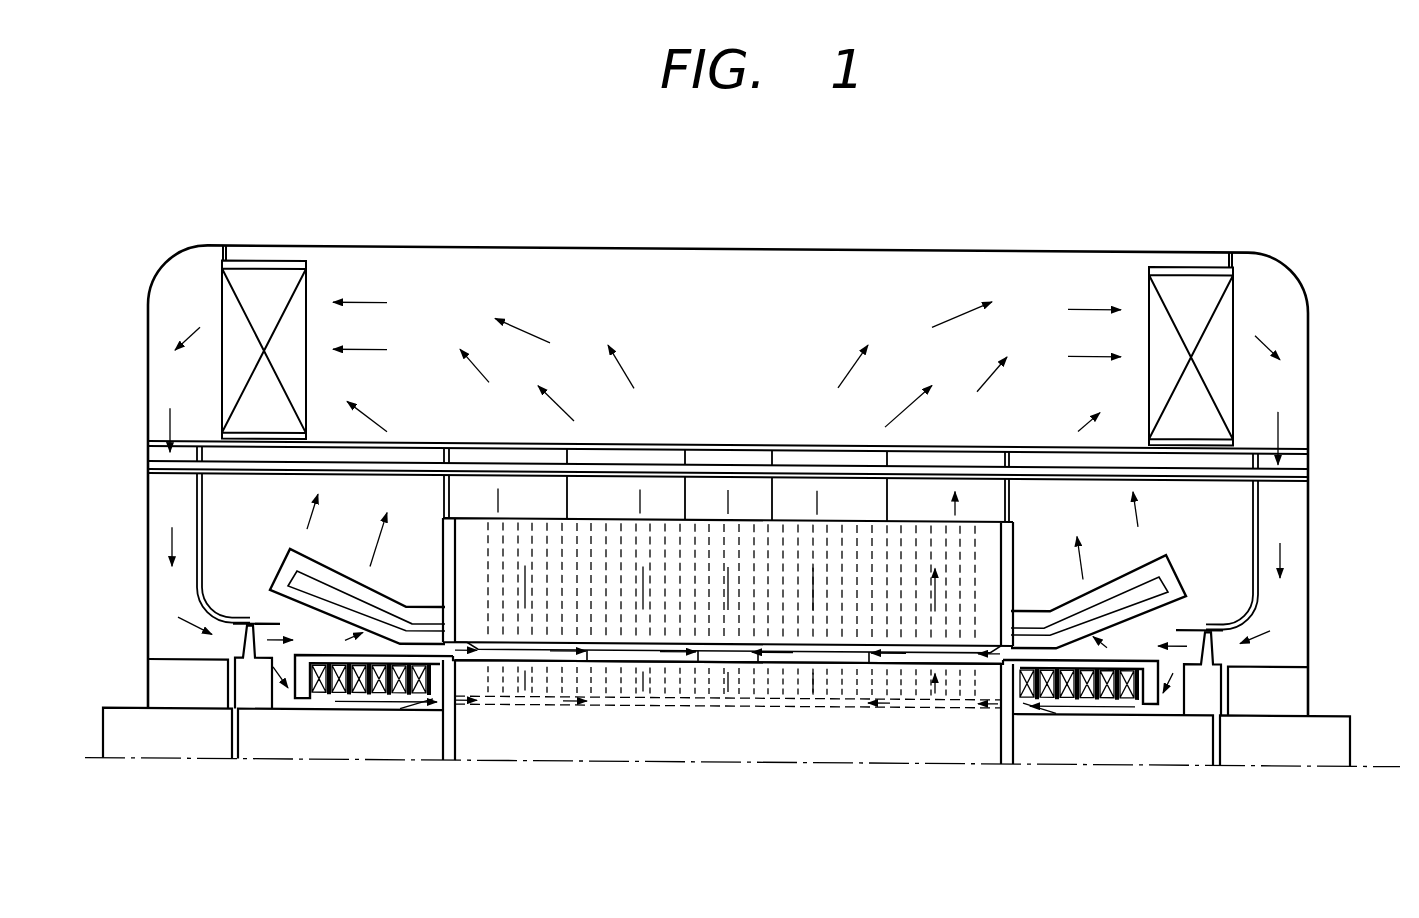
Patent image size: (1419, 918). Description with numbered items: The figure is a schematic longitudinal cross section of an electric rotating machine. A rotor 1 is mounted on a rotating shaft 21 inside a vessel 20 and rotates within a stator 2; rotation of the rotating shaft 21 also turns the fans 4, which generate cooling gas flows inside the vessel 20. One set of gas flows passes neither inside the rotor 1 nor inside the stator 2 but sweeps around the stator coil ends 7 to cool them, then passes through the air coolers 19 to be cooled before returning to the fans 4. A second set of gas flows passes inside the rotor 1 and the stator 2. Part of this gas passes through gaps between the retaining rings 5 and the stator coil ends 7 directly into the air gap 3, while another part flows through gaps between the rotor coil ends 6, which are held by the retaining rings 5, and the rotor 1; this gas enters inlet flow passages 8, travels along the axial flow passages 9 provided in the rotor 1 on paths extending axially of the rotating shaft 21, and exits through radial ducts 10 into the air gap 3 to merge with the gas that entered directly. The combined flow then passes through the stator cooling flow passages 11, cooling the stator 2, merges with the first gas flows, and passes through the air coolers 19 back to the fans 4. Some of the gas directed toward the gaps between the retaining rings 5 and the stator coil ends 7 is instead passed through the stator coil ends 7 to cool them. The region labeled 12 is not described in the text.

The rotor 1 is at (852, 740).
The stator 2 is at (472, 535).
The air gap 3 is at (625, 652).
The fans 4 is at (252, 672).
The retaining rings 5 is at (340, 690).
The rotor coil ends 6 is at (1135, 692).
The stator coil ends 7 is at (293, 557).
The inlet flow passages 8 is at (434, 706).
The axial flow passages 9 is at (660, 704).
The radial ducts 10 is at (756, 686).
The stator cooling flow passages 11 is at (967, 541).
The upper cooling chamber 12 is at (542, 338).
The air coolers 19 is at (262, 287).
The vessel 20 is at (1308, 530).
The rotating shaft 21 is at (205, 745).